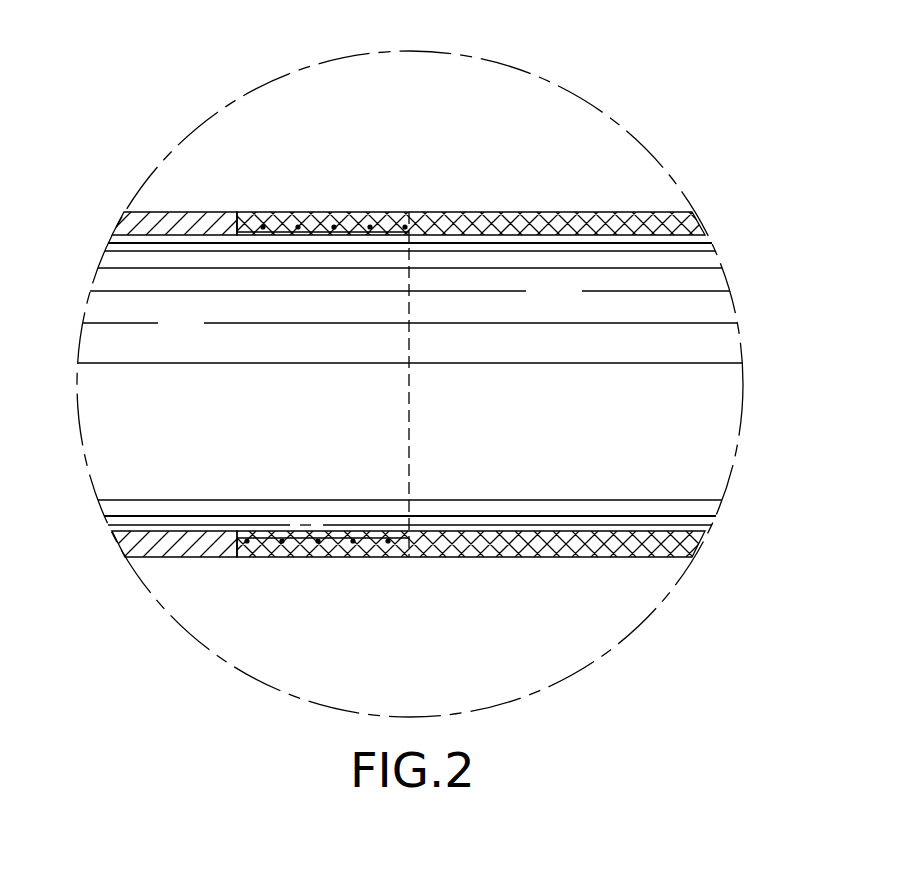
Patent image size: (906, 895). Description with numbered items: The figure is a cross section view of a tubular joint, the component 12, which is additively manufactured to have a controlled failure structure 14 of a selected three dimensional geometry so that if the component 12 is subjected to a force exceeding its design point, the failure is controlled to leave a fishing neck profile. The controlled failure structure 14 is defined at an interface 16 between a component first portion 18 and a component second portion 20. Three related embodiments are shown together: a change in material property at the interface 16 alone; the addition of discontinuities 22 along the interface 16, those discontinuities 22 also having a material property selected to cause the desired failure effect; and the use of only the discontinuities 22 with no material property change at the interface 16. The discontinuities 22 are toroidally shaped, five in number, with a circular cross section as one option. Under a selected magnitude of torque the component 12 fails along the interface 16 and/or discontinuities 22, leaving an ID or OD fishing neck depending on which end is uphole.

The component 12 is at (519, 152).
The controlled failure structure 14 is at (440, 163).
The interface 16 is at (277, 229).
The component first portion 18 is at (166, 235).
The component second portion 20 is at (541, 233).
The discontinuities 22 is at (370, 229).